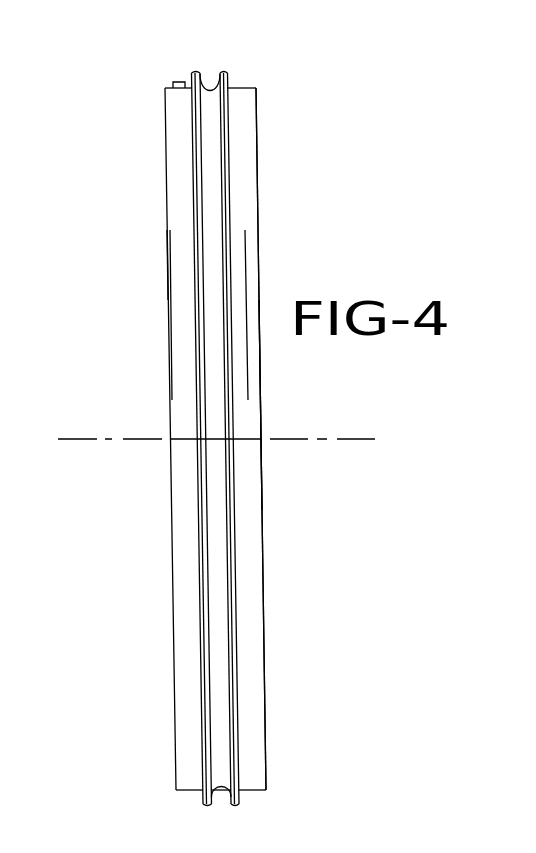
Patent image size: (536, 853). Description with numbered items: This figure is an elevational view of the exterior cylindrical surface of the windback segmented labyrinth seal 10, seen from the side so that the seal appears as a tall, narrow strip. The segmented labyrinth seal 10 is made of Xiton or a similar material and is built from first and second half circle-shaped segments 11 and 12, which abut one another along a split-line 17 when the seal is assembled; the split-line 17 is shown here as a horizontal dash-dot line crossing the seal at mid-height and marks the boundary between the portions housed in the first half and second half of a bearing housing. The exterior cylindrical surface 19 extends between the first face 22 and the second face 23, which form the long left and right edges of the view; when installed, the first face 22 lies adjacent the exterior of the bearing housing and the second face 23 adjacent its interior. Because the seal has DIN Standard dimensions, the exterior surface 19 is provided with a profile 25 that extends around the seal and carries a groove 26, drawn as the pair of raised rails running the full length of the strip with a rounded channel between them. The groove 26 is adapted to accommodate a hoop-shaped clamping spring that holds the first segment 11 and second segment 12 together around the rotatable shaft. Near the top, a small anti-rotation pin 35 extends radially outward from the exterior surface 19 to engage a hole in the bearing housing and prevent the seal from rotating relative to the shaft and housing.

The segmented labyrinth seal 10 is at (332, 92).
The first segment 11 is at (172, 539).
The second segment 12 is at (258, 186).
The split-line 17 is at (355, 437).
The exterior cylindrical surface 19 is at (243, 263).
The first face 22 is at (262, 510).
The second face 23 is at (168, 275).
The profile 25 is at (225, 185).
The groove 26 is at (210, 90).
The anti-rotation pin 35 is at (178, 83).